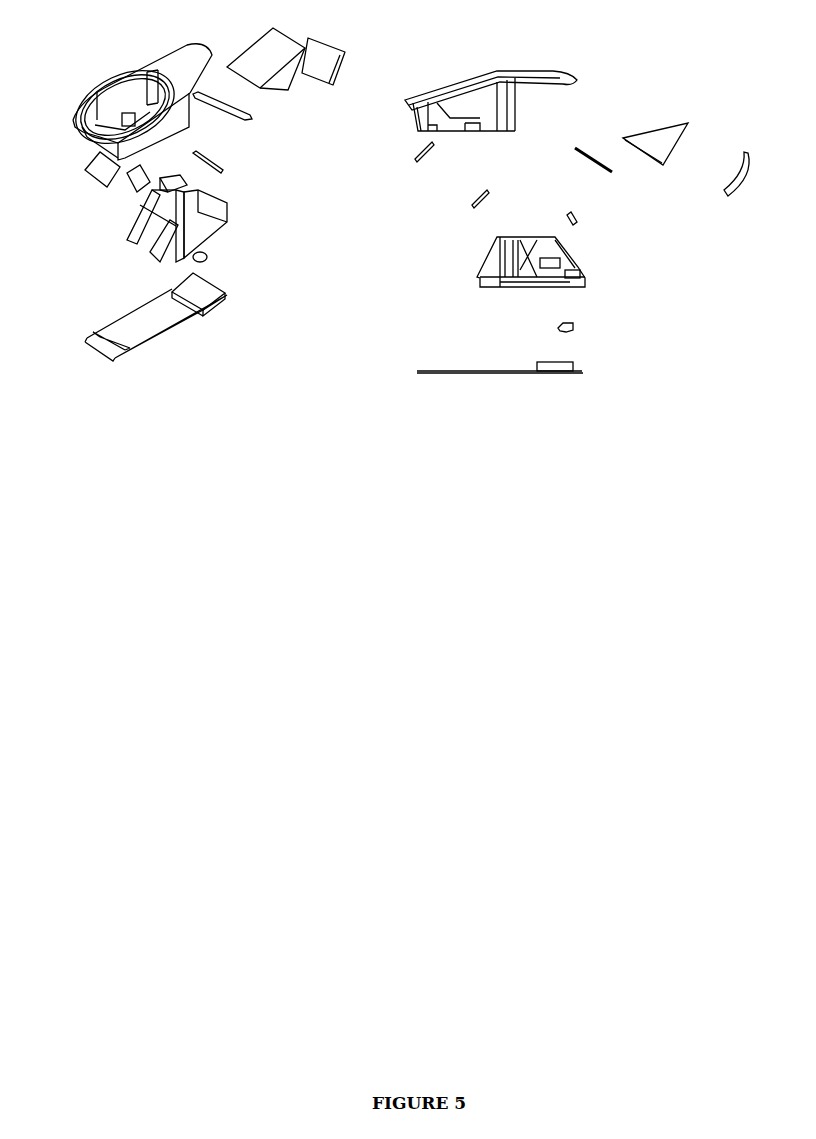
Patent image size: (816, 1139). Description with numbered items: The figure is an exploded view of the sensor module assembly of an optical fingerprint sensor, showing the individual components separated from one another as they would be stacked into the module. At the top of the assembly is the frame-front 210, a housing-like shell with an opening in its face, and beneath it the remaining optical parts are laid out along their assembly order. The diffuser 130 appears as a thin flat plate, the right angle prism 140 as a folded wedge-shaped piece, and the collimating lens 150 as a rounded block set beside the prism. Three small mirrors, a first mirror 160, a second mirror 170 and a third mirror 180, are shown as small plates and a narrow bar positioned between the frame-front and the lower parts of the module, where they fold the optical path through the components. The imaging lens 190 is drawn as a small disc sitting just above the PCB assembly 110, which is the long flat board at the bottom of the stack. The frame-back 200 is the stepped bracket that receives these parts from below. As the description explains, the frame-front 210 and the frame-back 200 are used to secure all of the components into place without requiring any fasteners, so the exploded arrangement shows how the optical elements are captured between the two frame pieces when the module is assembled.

The PCB assembly 110 is at (213, 310).
The diffuser 130 is at (255, 117).
The right angle prism 140 is at (250, 45).
The collimating lens 150 is at (347, 67).
The first mirror 160 is at (98, 173).
The second mirror 170 is at (138, 182).
The third mirror 180 is at (213, 160).
The imaging lens 190 is at (217, 257).
The frame-back 200 is at (583, 285).
The frame-front 210 is at (108, 73).